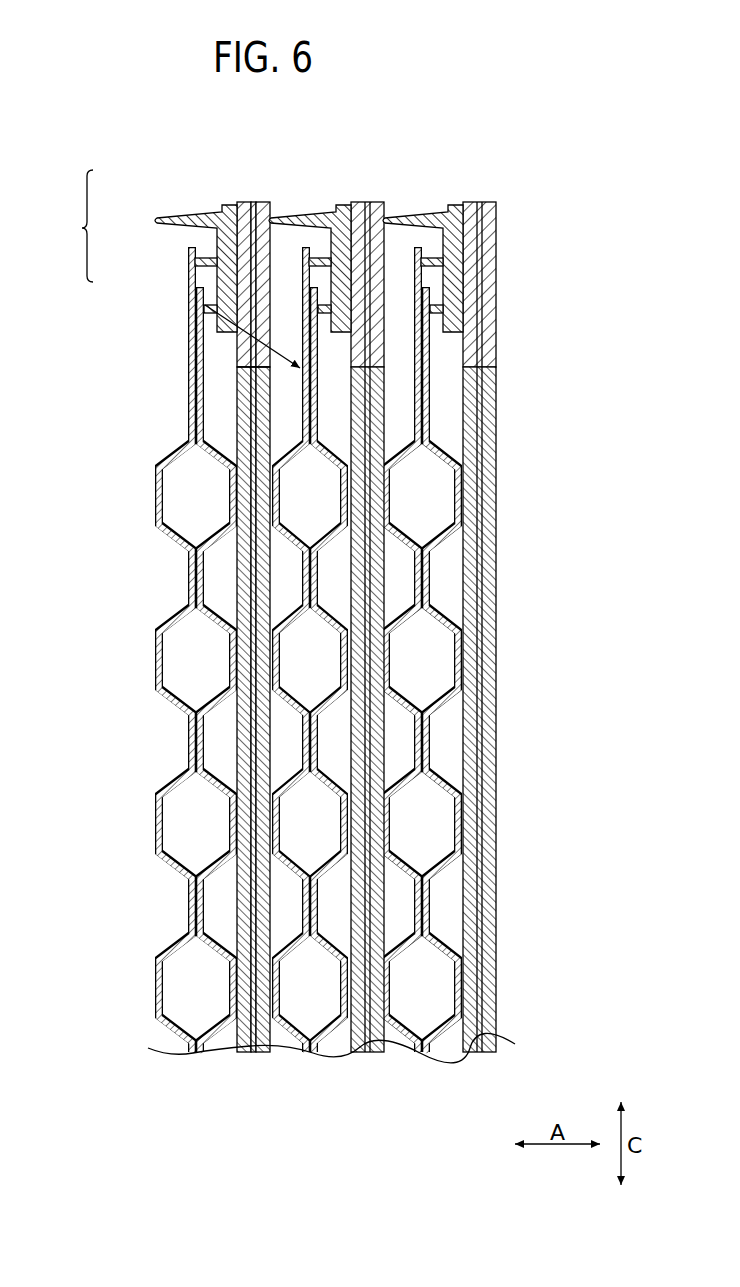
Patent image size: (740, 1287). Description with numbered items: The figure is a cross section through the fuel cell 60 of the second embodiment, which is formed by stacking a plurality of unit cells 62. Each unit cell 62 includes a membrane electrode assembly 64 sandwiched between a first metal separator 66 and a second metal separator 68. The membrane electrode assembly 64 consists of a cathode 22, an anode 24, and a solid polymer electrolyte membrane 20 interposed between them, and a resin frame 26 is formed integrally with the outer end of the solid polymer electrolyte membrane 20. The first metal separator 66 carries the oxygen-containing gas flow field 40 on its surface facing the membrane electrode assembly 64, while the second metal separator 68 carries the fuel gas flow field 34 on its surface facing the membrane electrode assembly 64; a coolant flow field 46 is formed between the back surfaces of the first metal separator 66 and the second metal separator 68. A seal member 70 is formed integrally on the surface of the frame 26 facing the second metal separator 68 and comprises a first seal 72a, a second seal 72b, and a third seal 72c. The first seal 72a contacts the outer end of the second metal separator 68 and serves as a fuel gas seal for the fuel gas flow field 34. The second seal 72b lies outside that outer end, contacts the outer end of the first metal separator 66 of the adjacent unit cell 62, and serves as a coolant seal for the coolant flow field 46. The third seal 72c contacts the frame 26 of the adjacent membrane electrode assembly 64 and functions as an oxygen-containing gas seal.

The fuel cell 60 is at (478, 146).
The unit cell 62 is at (75, 226).
The membrane electrode assembly 64 is at (165, 611).
The first metal separator 66 is at (203, 285).
The second metal separator 68 is at (187, 248).
The resin frame 26 is at (238, 350).
The anode 24 is at (244, 393).
The solid polymer electrolyte membrane 20 is at (254, 441).
The cathode 22 is at (264, 480).
The fuel gas flow field 34 is at (218, 577).
The oxygen-containing gas flow field 40 is at (285, 578).
The coolant flow field 46 is at (303, 660).
The seal member 70 is at (283, 215).
The first seal 72a is at (438, 303).
The second seal 72b is at (443, 258).
The third seal 72c is at (399, 216).